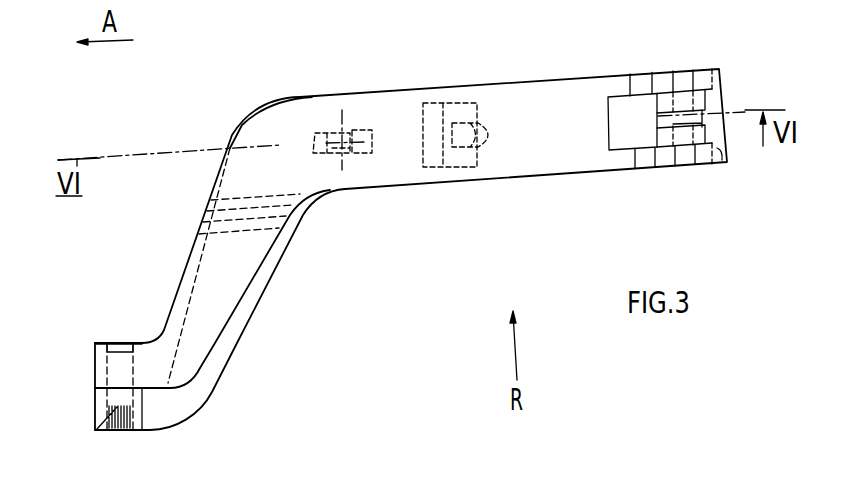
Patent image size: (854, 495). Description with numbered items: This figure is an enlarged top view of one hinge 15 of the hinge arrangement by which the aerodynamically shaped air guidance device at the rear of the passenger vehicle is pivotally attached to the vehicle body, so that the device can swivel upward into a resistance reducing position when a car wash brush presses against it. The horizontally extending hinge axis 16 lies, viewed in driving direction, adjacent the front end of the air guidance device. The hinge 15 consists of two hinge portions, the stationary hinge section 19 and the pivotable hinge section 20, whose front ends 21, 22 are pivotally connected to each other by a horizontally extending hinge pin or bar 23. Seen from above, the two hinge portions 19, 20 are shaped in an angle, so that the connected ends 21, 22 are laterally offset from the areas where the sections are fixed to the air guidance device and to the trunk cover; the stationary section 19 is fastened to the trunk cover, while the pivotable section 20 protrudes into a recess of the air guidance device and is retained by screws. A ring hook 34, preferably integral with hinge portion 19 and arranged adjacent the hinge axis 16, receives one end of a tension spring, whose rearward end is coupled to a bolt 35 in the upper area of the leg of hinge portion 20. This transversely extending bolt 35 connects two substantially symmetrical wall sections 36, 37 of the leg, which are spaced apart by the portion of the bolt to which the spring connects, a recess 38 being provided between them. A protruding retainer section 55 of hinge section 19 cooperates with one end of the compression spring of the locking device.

The hinge 15 is at (93, 370).
The hinge axis 16 is at (117, 358).
The stationary hinge section 19 is at (234, 355).
The pivotable hinge section 20 is at (203, 214).
The end of hinge section 21 is at (145, 355).
The end of hinge section 22 is at (155, 413).
The hinge pin or bar 23 is at (105, 428).
The ring hook 34 is at (350, 120).
The bolt 35 is at (678, 77).
The wall section 36 is at (713, 77).
The wall section 37 is at (720, 160).
The recess 38 is at (698, 103).
The retainer section 55 is at (490, 115).